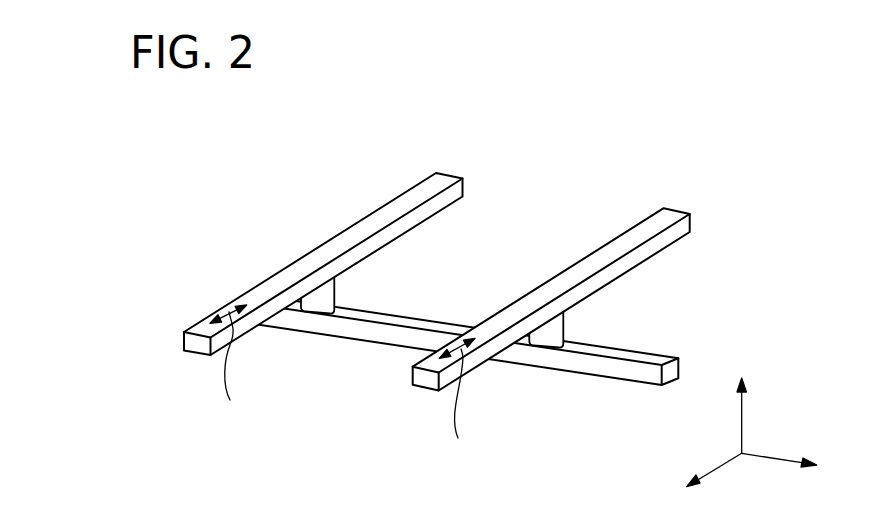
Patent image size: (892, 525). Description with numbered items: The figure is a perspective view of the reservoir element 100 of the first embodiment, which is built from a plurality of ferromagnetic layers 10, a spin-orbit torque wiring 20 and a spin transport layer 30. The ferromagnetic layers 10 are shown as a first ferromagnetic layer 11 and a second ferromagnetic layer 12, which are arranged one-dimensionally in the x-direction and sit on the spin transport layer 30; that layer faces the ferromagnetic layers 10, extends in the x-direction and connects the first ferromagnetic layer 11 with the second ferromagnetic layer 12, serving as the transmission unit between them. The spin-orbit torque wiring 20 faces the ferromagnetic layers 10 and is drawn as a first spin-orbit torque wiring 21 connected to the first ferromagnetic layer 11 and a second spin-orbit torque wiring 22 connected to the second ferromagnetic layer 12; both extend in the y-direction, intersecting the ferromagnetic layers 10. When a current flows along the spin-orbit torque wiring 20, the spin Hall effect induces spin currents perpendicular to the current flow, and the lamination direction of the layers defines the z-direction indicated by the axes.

The reservoir element 100 is at (725, 138).
The ferromagnetic layers 10 is at (432, 351).
The first ferromagnetic layer 11 is at (317, 298).
The second ferromagnetic layer 12 is at (547, 332).
The spin-orbit torque wiring 20 is at (437, 260).
The first spin-orbit torque wiring 21 is at (385, 217).
The second spin-orbit torque wiring 22 is at (612, 252).
The spin transport layer 30 is at (638, 355).